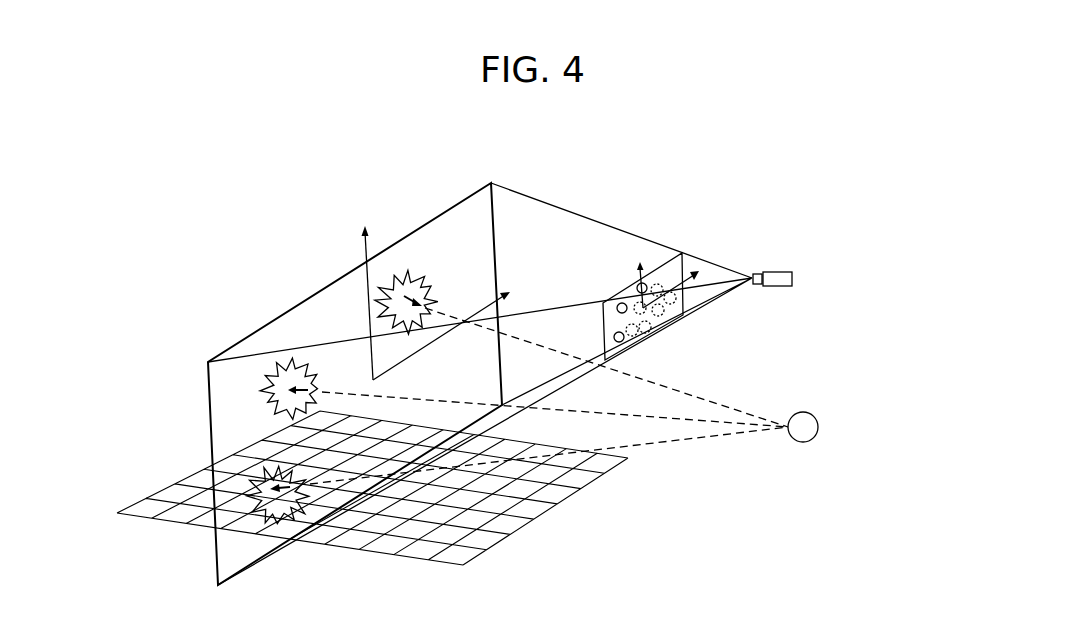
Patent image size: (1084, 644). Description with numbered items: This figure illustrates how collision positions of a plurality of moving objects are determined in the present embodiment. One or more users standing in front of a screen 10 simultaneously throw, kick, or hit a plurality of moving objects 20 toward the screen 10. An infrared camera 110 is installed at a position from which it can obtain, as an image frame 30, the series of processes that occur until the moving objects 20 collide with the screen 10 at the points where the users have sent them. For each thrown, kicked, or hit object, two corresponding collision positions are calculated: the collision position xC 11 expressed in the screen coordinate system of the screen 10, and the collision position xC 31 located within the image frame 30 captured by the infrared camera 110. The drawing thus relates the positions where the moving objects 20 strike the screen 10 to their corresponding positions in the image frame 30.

The screen 10 is at (496, 204).
The collision position of screen coordinate system 11 is at (433, 253).
The moving objects 20 is at (814, 442).
The image frame 30 is at (694, 305).
The collision position of image frame 31 is at (658, 262).
The infrared camera 110 is at (792, 279).